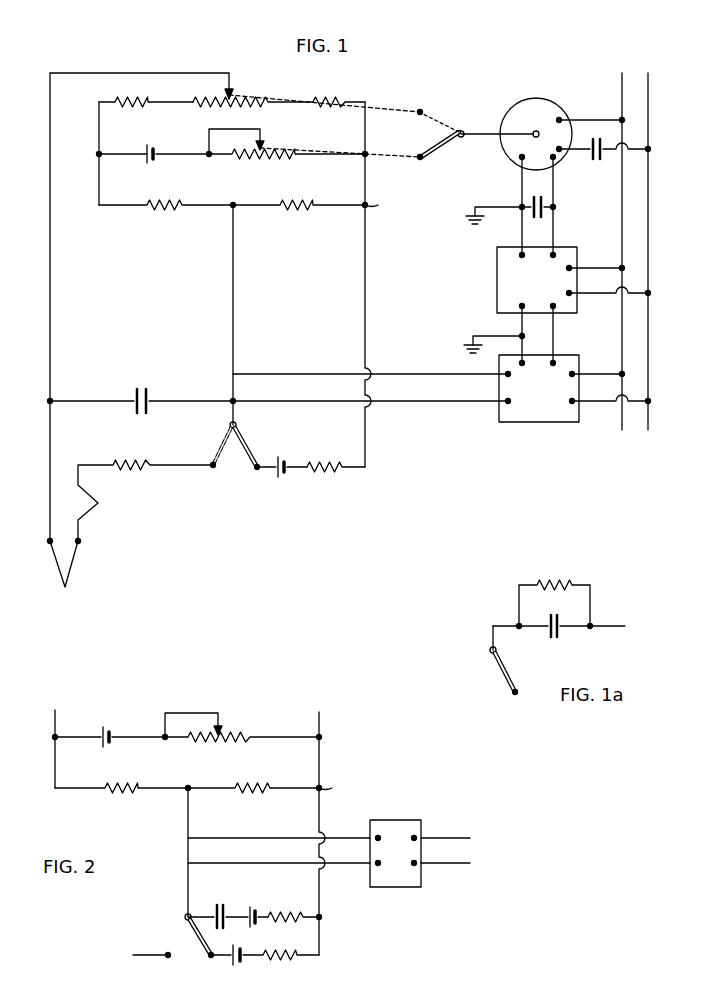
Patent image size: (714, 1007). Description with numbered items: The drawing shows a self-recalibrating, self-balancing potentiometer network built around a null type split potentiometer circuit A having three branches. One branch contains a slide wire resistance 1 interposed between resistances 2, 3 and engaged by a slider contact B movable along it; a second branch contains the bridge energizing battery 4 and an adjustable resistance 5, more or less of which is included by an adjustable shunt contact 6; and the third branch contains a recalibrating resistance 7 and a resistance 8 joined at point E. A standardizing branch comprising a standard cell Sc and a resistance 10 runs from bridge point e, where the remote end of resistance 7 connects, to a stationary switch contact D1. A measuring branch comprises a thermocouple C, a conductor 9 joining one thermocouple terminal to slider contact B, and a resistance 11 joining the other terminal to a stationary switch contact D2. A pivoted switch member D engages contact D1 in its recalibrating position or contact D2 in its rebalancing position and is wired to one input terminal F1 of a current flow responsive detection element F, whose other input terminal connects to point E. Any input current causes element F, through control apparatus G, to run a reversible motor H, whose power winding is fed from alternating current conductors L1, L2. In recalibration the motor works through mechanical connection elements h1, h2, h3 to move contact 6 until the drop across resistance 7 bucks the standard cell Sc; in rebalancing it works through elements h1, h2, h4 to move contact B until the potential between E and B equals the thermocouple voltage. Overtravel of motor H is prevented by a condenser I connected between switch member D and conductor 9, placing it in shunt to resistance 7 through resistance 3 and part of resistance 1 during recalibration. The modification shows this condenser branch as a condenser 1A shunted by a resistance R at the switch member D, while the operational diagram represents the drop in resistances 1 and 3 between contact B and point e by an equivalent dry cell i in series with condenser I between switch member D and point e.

In FIG. 1, the slide wire resistance 1 is at (244, 108).
In FIG. 1, the resistance 2 is at (136, 107).
In FIG. 1, the resistance 3 is at (324, 108).
In FIG. 1, the bridge energizing battery 4 is at (155, 149).
In FIG. 2, the bridge energizing battery 4 is at (112, 733).
In FIG. 1, the adjustable resistance 5 is at (262, 158).
In FIG. 2, the adjustable resistance 5 is at (222, 742).
In FIG. 1, the contact 6 is at (263, 150).
In FIG. 2, the contact 6 is at (222, 733).
In FIG. 1, the recalibrating resistance 7 is at (296, 201).
In FIG. 2, the recalibrating resistance 7 is at (252, 784).
In FIG. 1, the resistance 8 is at (168, 201).
In FIG. 2, the resistance 8 is at (137, 776).
In FIG. 1, the conductor 9 is at (50, 157).
In FIG. 1, the resistance 10 is at (318, 463).
In FIG. 2, the resistance 10 is at (284, 962).
In FIG. 1, the resistance 11 is at (125, 470).
In FIG. 1, the split potentiometer circuit A is at (106, 216).
In FIG. 1, the slider contact B is at (235, 92).
In FIG. 1, the thermocouple C is at (72, 571).
In FIG. 1, the pivoted switch member D is at (254, 464).
In FIG. 1a, the pivoted switch member D is at (505, 673).
In FIG. 2, the pivoted switch member D is at (197, 938).
In FIG. 1, the stationary switch contact D1 is at (258, 462).
In FIG. 1, the stationary switch contact D2 is at (213, 470).
In FIG. 1, the bridge circuit point E is at (233, 204).
In FIG. 2, the bridge circuit point E is at (188, 787).
In FIG. 1, the bridge circuit point e is at (376, 207).
In FIG. 2, the bridge circuit point e is at (330, 790).
In FIG. 1, the detection element F is at (542, 398).
In FIG. 2, the detection element F is at (400, 862).
In FIG. 1, the input circuit terminal F1 is at (480, 378).
In FIG. 1, the control apparatus G is at (541, 290).
In FIG. 1, the reversible motor H is at (548, 103).
In FIG. 1, the mechanical connection element h1 is at (463, 130).
In FIG. 1, the mechanical connection element h2 is at (452, 162).
In FIG. 1, the mechanical connection element h3 is at (420, 160).
In FIG. 1, the mechanical connection element h4 is at (418, 110).
In FIG. 1, the condenser I is at (145, 392).
In FIG. 2, the condenser I is at (216, 905).
In FIG. 2, the dry cell i is at (250, 905).
In FIG. 1, the conductor L1 is at (622, 430).
In FIG. 1, the conductor L2 is at (648, 430).
In FIG. 1a, the resistor R is at (556, 581).
In FIG. 1a, the capacitor 1A is at (559, 635).
In FIG. 1, the standard cell Sc is at (282, 478).
In FIG. 2, the standard cell Sc is at (238, 965).